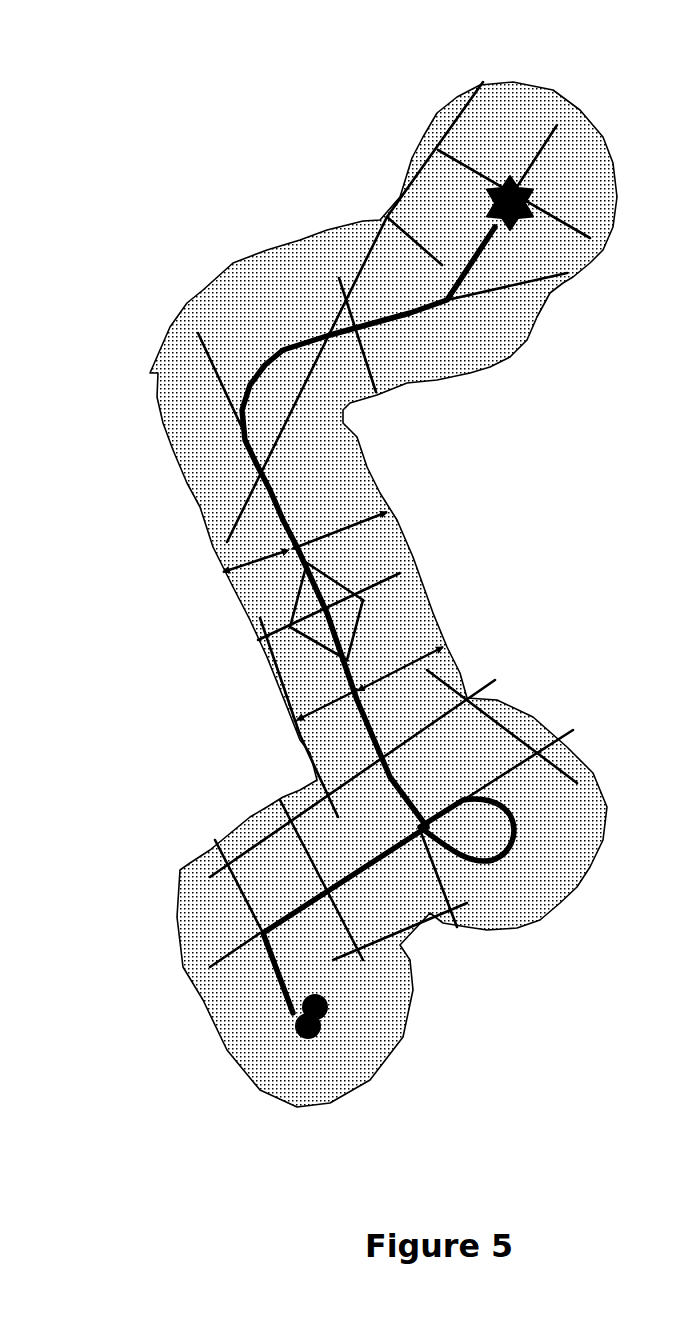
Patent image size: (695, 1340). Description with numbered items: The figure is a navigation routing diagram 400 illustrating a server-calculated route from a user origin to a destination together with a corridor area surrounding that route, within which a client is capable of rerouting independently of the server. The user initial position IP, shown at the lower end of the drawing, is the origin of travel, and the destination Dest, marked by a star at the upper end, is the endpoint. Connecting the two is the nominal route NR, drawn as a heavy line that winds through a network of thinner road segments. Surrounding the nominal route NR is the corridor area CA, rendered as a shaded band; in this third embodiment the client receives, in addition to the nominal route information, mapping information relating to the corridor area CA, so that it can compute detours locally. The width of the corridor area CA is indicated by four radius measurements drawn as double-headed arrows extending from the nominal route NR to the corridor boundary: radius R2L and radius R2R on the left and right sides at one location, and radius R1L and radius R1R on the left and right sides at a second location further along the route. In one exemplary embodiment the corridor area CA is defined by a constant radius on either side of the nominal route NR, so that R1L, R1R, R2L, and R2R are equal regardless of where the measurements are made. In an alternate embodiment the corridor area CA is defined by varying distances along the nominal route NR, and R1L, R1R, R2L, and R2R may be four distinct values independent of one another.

The map display of navigation route with corridor area 400 is at (322, 557).
The corridor area CA is at (383, 594).
The nominal route NR is at (378, 620).
The radius R2R is at (342, 534).
The radius R2L is at (253, 572).
The radius R1R is at (403, 672).
The radius R1L is at (325, 711).
The destination Dest is at (512, 216).
The user initial position IP is at (311, 1027).